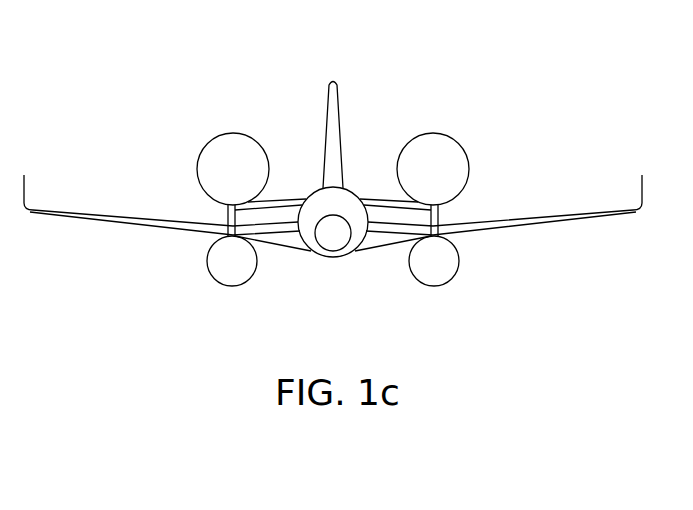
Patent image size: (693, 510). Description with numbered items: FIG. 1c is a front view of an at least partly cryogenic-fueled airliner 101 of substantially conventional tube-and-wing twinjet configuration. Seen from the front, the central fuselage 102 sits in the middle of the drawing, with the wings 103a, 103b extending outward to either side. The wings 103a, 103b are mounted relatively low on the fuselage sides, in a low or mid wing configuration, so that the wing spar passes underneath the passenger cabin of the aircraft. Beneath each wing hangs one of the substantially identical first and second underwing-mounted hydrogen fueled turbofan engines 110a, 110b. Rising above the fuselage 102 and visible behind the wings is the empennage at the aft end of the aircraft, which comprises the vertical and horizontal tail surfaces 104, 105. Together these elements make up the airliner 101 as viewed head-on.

The airliner 101 is at (162, 100).
The fuselage 102 is at (333, 252).
The wing 103a is at (593, 210).
The wing 103b is at (116, 209).
The vertical tail surface 104 is at (338, 120).
The horizontal tail surface 105 is at (288, 202).
The hydrogen fueled turbofan engine 110a is at (208, 258).
The hydrogen fueled turbofan engine 110b is at (458, 258).